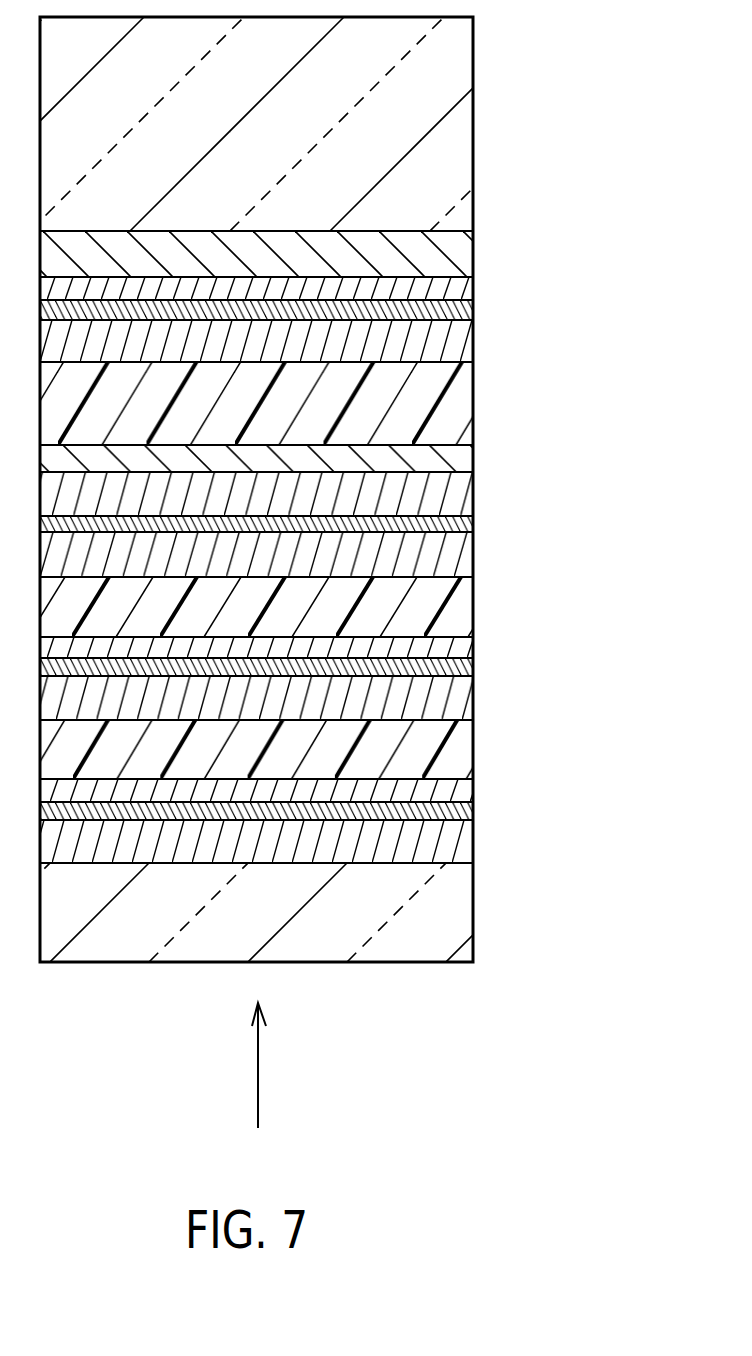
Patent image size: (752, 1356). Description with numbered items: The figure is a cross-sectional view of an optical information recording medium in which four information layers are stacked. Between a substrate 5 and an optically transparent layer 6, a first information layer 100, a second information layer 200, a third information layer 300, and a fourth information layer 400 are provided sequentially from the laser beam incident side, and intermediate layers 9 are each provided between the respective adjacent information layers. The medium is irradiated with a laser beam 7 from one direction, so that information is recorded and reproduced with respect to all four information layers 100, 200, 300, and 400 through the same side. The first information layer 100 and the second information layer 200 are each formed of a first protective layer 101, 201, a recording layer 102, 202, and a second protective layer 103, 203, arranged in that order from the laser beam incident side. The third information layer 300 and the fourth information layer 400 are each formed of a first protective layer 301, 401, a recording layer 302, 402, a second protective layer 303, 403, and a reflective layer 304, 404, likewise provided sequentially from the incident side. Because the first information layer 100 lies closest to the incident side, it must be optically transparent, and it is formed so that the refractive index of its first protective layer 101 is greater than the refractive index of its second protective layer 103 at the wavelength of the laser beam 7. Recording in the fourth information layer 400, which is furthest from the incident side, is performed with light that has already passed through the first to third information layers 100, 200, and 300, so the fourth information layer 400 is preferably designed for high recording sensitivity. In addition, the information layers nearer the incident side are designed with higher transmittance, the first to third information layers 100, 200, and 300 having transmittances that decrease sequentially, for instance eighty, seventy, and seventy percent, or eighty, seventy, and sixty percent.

The substrate 5 is at (453, 143).
The optically transparent layer 6 is at (448, 923).
The laser beam 7 is at (260, 1068).
The intermediate layer 9 is at (452, 399).
The first information layer 100 is at (342, 824).
The first protective layer 101 is at (302, 848).
The recording layer 102 is at (450, 810).
The second protective layer 103 is at (450, 790).
The second information layer 200 is at (342, 681).
The first protective layer 201 is at (302, 703).
The recording layer 202 is at (450, 668).
The second protective layer 203 is at (450, 645).
The third information layer 300 is at (342, 517).
The first protective layer 301 is at (302, 561).
The recording layer 302 is at (450, 525).
The second protective layer 303 is at (453, 495).
The reflective layer 304 is at (452, 460).
The fourth information layer 400 is at (343, 302).
The first protective layer 401 is at (303, 348).
The recording layer 402 is at (450, 310).
The second protective layer 403 is at (450, 292).
The reflective layer 404 is at (450, 255).